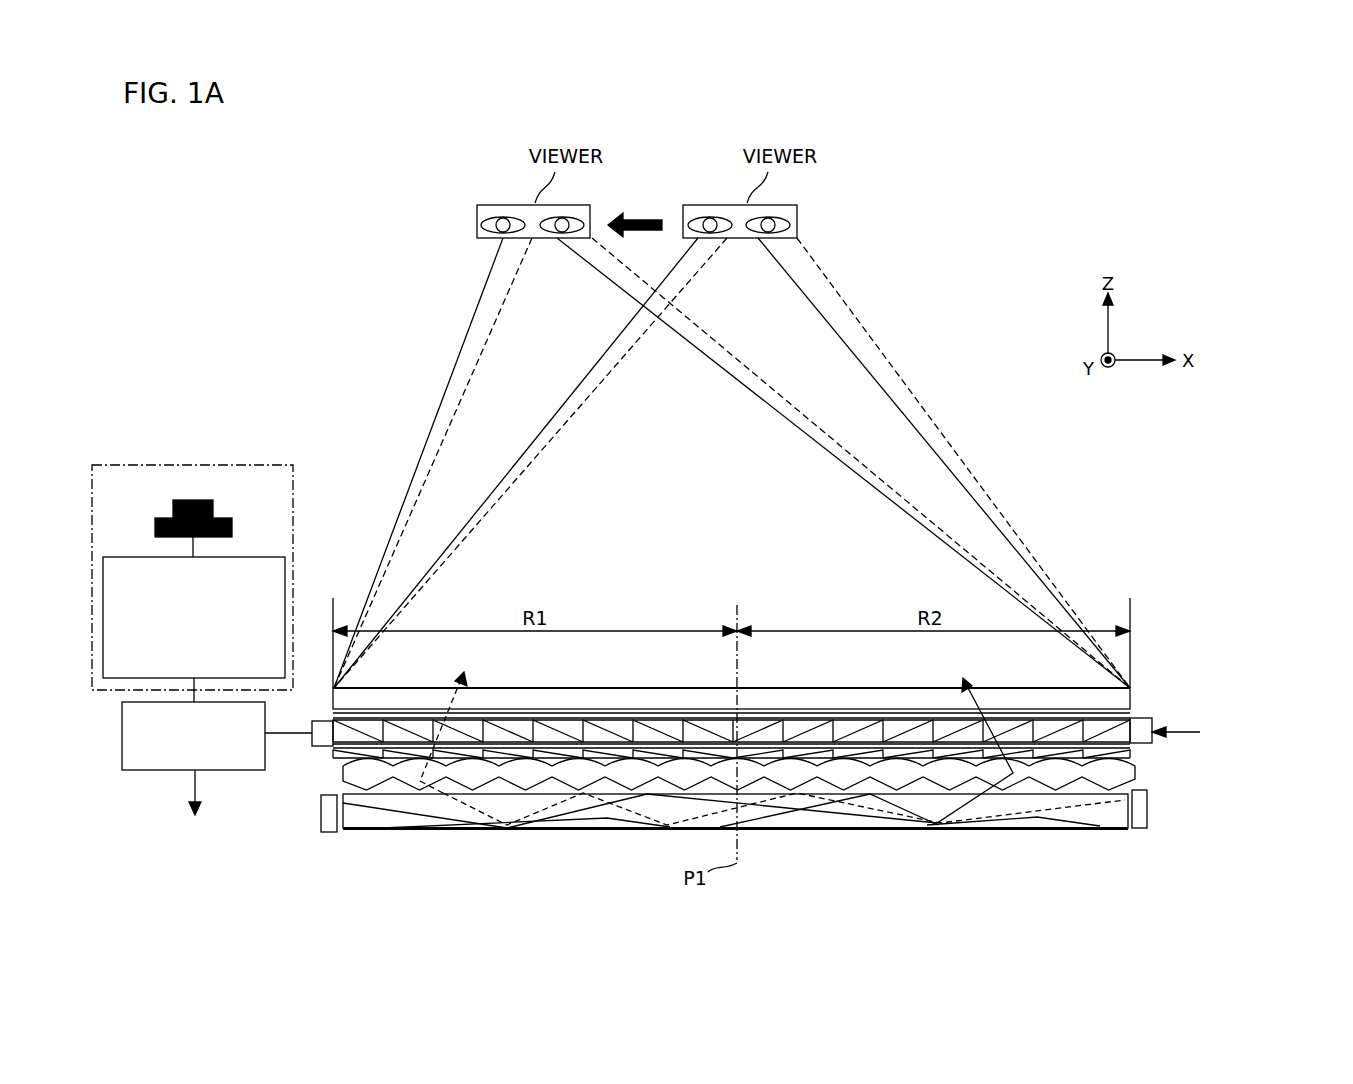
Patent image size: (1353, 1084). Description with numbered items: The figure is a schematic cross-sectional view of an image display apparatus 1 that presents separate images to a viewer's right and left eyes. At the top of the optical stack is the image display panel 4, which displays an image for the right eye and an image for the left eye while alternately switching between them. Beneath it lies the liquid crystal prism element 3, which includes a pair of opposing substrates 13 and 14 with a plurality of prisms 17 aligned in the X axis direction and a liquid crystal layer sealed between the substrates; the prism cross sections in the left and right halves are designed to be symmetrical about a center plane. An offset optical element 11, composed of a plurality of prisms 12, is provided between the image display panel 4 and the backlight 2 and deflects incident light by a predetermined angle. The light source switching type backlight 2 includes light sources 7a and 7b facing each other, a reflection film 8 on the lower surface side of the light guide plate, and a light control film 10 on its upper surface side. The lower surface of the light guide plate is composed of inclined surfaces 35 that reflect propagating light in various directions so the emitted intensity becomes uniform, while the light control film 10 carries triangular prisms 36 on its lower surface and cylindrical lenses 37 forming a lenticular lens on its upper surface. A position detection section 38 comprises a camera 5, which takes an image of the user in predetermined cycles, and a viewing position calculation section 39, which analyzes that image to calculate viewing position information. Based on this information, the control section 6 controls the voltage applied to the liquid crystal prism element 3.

The image display apparatus 1 is at (282, 297).
The light source switching type backlight 2 is at (752, 784).
The liquid crystal prism element 3 is at (787, 720).
The image display panel 4 is at (1130, 695).
The camera 5 is at (230, 517).
The control section 6 is at (233, 755).
The light source 7a is at (327, 833).
The light source 7b is at (1138, 828).
The reflection film 8 is at (778, 830).
The light control film 10 is at (1057, 778).
The offset optical element 11 is at (1130, 752).
The prism 12 is at (972, 757).
The opposing substrate 13 is at (532, 713).
The opposing substrate 14 is at (731, 701).
The prism 17 is at (1058, 723).
The inclined surface 35 is at (583, 818).
The prism 36 is at (532, 783).
The cylindrical lens 37 is at (473, 763).
The position detection section 38 is at (160, 465).
The viewing position calculation section 39 is at (237, 557).